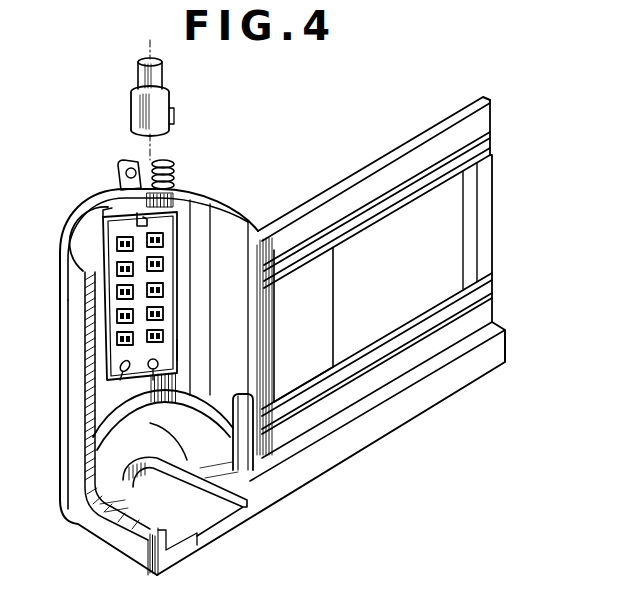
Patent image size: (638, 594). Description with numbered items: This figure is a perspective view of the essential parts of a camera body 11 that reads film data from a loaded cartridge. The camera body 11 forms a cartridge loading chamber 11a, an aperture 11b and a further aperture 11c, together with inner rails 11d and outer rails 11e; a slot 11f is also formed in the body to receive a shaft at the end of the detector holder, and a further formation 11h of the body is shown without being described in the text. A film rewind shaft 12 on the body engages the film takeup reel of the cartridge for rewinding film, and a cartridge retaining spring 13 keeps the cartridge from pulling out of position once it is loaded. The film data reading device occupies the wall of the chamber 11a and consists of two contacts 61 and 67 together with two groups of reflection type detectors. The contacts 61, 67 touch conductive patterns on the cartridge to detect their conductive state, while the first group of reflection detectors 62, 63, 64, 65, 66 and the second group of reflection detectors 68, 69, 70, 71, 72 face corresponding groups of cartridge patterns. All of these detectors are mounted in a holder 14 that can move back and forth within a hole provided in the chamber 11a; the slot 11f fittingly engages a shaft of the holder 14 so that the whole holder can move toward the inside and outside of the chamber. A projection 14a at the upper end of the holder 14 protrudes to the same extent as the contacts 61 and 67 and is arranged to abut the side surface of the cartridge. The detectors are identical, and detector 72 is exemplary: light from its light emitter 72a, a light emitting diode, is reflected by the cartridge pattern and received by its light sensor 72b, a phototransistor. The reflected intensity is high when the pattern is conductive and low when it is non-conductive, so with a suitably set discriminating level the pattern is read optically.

The camera body 11 is at (373, 430).
The cartridge loading chamber 11a is at (217, 388).
The aperture 11b is at (462, 78).
The aperture 11c is at (463, 223).
The inner rails 11d is at (495, 150).
The outer rails 11e is at (493, 132).
The slot 11f is at (128, 160).
The board guide edge 11h is at (176, 349).
The film rewind shaft 12 is at (135, 107).
The cartridge retaining spring 13 is at (280, 466).
The holder 14 is at (110, 372).
The projection 14a is at (108, 197).
The contact 61 is at (153, 372).
The reflection detector 62 is at (163, 335).
The reflection detector 63 is at (163, 313).
The reflection detector 64 is at (163, 288).
The reflection detector 65 is at (163, 261).
The reflection detector 66 is at (163, 240).
The contact 67 is at (122, 376).
The reflection detector 68 is at (117, 340).
The reflection detector 69 is at (117, 316).
The reflection detector 70 is at (117, 292).
The reflection detector 71 is at (117, 270).
The reflection detector 72 is at (117, 243).
The light emitter 72a is at (115, 243).
The light sensor 72b is at (137, 213).